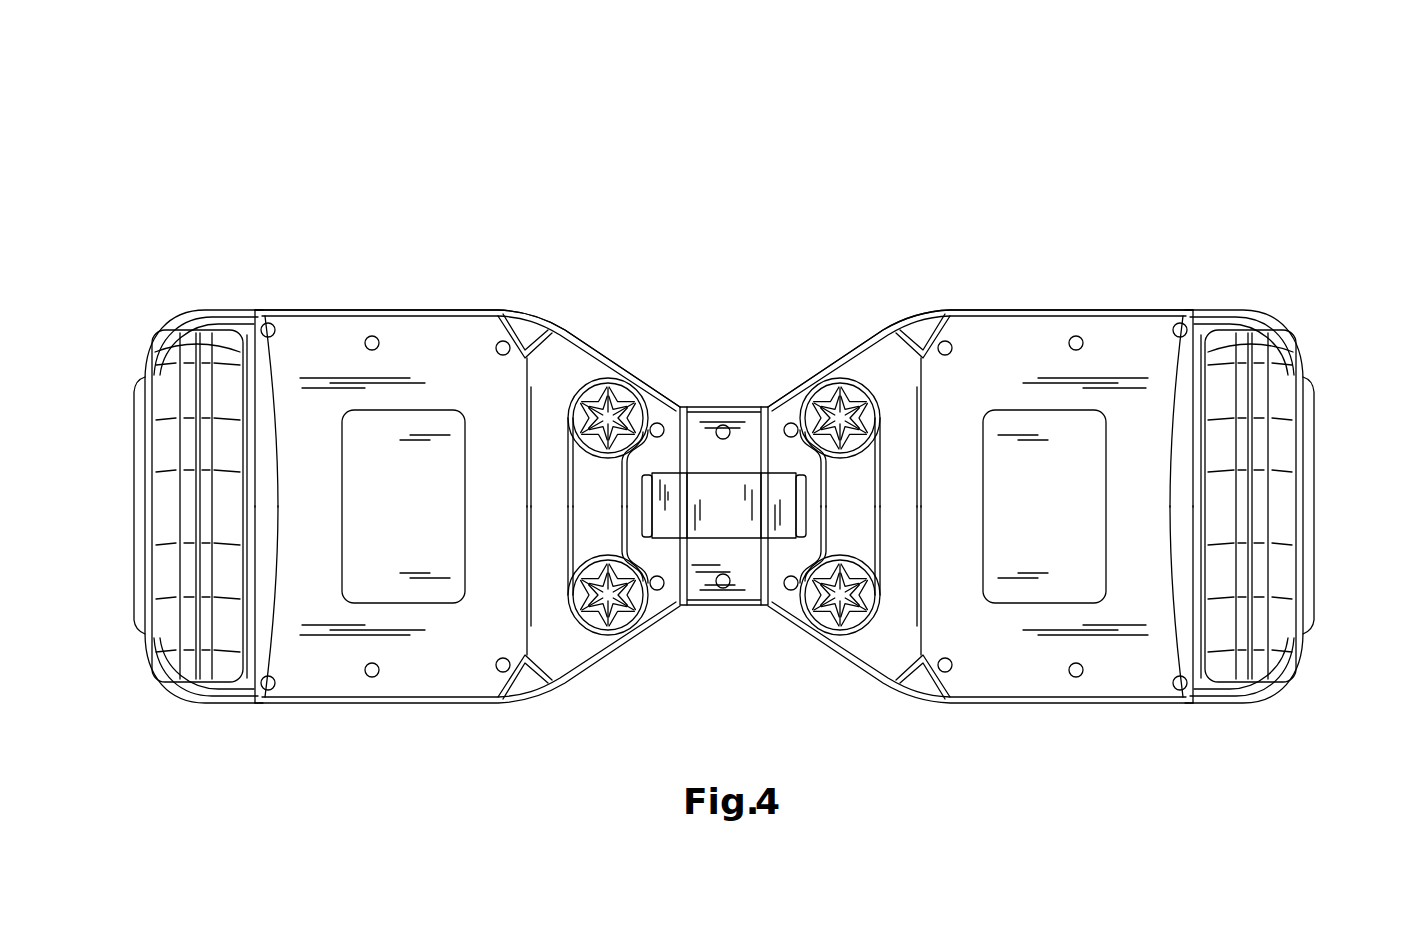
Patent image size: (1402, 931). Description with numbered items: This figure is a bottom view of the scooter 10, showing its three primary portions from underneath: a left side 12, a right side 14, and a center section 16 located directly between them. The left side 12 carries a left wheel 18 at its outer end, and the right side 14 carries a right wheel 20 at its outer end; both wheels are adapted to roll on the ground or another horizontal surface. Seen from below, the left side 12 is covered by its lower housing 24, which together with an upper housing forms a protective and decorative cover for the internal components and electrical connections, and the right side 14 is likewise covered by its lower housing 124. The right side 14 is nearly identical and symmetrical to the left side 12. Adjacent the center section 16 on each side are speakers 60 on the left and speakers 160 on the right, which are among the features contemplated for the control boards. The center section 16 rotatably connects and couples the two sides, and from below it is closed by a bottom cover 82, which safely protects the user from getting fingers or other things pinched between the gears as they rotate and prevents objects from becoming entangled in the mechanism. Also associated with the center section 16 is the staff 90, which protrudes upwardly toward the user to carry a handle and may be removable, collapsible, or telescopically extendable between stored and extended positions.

The scooter 10 is at (723, 376).
The left side 12 is at (467, 425).
The right side 14 is at (980, 425).
The center section 16 is at (714, 431).
The left wheel 18 is at (185, 505).
The right wheel 20 is at (1265, 500).
The lower housing 24 is at (393, 313).
The lower housing 124 is at (1062, 330).
The speakers 60 is at (609, 390).
The speakers 160 is at (838, 390).
The bottom cover 82 is at (700, 420).
The staff 90 is at (748, 520).